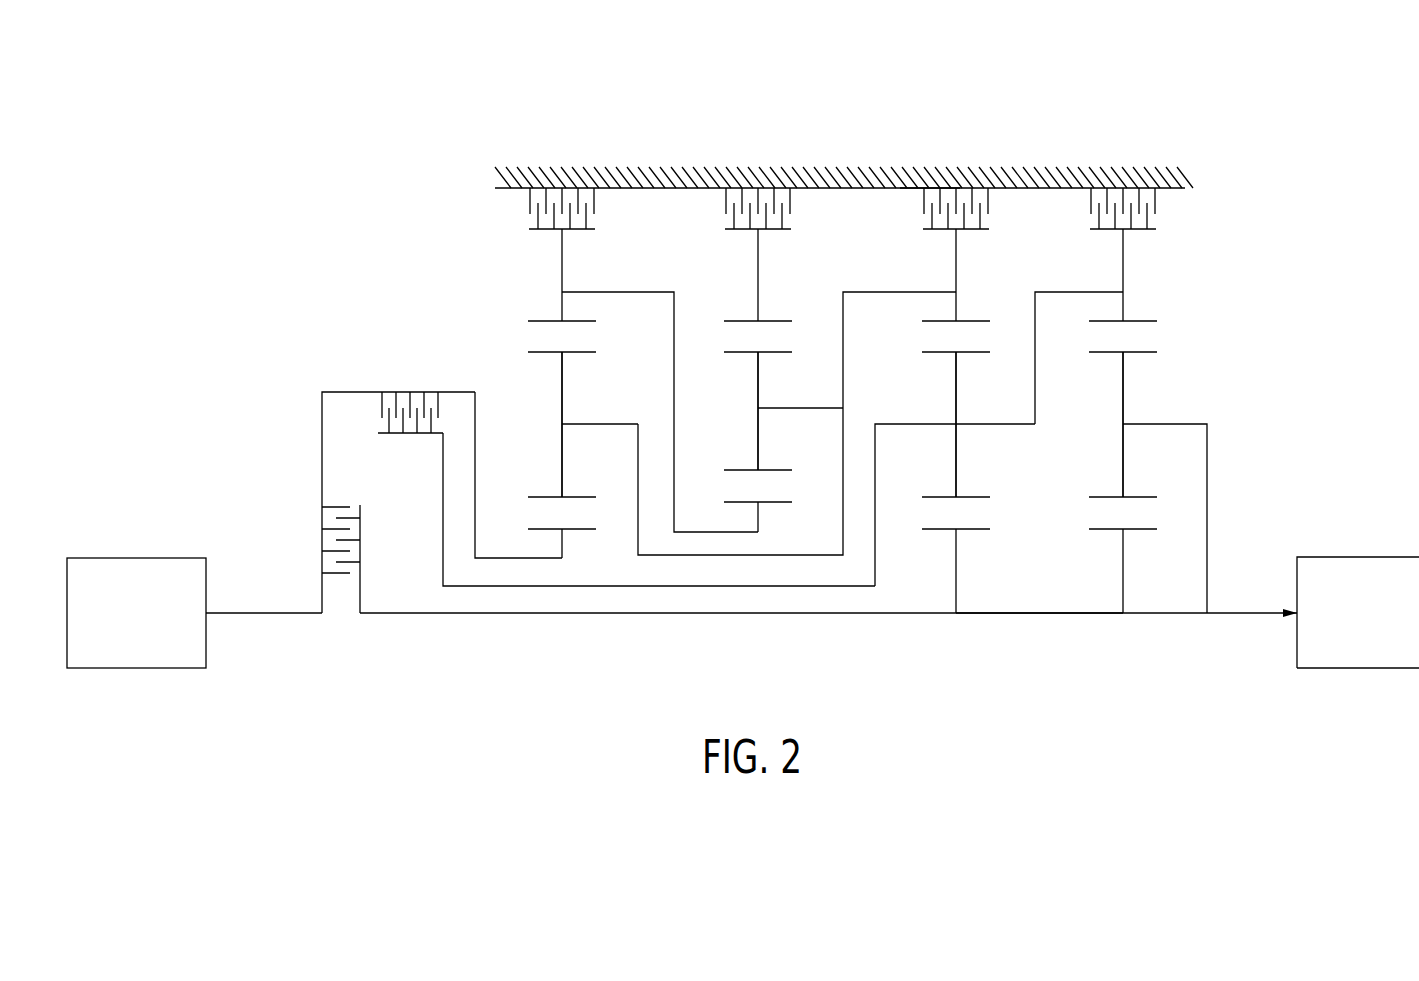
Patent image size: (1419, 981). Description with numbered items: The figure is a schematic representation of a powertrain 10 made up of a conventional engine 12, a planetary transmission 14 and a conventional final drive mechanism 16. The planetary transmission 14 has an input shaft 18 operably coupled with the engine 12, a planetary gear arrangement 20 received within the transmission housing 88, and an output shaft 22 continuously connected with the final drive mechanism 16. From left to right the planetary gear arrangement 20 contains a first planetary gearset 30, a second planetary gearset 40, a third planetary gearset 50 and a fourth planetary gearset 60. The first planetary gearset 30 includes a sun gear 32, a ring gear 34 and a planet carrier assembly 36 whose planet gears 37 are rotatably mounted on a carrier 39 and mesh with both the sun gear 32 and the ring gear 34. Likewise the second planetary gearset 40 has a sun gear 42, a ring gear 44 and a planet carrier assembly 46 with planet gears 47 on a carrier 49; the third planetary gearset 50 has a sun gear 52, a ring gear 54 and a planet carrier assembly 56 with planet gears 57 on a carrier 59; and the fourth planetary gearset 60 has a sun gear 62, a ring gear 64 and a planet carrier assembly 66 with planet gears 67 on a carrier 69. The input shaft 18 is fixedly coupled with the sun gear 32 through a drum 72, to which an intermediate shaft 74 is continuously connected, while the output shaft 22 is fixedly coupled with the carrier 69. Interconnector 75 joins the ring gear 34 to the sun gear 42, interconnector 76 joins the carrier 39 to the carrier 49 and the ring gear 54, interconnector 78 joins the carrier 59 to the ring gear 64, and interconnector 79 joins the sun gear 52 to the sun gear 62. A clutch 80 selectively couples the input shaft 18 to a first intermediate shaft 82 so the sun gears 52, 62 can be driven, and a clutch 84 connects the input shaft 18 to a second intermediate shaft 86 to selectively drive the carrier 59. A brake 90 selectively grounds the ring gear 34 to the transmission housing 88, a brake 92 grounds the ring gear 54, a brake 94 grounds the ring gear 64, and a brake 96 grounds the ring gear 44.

The powertrain 10 is at (410, 305).
The engine 12 is at (145, 540).
The planetary transmission 14 is at (540, 160).
The final drive mechanism 16 is at (1372, 535).
The input shaft 18 is at (262, 613).
The planetary gear arrangement 20 is at (828, 155).
The output shaft 22 is at (1247, 613).
The first planetary gearset 30 is at (575, 540).
The sun gear 32 is at (590, 529).
The ring gear 34 is at (552, 321).
The planet carrier assembly 36 is at (550, 462).
The planet gears 37 is at (565, 398).
The carrier 39 is at (600, 424).
The second planetary gearset 40 is at (768, 540).
The sun gear 42 is at (785, 502).
The ring gear 44 is at (768, 321).
The planet carrier assembly 46 is at (748, 387).
The planet gears 47 is at (762, 398).
The carrier 49 is at (800, 408).
The third planetary gearset 50 is at (968, 540).
The sun gear 52 is at (985, 529).
The ring gear 54 is at (972, 321).
The planet carrier assembly 56 is at (930, 412).
The planet gears 57 is at (960, 398).
The carrier 59 is at (1012, 424).
The fourth planetary gearset 60 is at (1133, 540).
The sun gear 62 is at (1145, 529).
The ring gear 64 is at (1135, 321).
The planet carrier assembly 66 is at (1112, 410).
The planet gears 67 is at (1125, 398).
The carrier 69 is at (1162, 424).
The drum 72 is at (330, 392).
The intermediate shaft 74 is at (505, 558).
The interconnector 75 is at (633, 292).
The interconnector 76 is at (845, 318).
The interconnector 78 is at (1050, 292).
The interconnector 79 is at (1060, 613).
The clutch 80 is at (340, 490).
The first intermediate shaft 82 is at (668, 613).
The clutch 84 is at (380, 400).
The second intermediate shaft 86 is at (527, 586).
The transmission housing 88 is at (910, 175).
The brake 90 is at (598, 211).
The brake 92 is at (993, 211).
The brake 94 is at (1160, 211).
The brake 96 is at (718, 206).